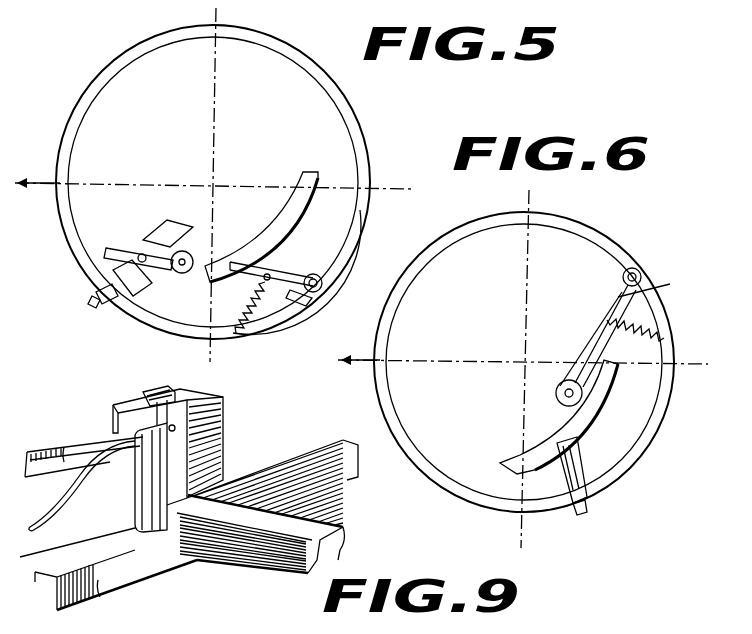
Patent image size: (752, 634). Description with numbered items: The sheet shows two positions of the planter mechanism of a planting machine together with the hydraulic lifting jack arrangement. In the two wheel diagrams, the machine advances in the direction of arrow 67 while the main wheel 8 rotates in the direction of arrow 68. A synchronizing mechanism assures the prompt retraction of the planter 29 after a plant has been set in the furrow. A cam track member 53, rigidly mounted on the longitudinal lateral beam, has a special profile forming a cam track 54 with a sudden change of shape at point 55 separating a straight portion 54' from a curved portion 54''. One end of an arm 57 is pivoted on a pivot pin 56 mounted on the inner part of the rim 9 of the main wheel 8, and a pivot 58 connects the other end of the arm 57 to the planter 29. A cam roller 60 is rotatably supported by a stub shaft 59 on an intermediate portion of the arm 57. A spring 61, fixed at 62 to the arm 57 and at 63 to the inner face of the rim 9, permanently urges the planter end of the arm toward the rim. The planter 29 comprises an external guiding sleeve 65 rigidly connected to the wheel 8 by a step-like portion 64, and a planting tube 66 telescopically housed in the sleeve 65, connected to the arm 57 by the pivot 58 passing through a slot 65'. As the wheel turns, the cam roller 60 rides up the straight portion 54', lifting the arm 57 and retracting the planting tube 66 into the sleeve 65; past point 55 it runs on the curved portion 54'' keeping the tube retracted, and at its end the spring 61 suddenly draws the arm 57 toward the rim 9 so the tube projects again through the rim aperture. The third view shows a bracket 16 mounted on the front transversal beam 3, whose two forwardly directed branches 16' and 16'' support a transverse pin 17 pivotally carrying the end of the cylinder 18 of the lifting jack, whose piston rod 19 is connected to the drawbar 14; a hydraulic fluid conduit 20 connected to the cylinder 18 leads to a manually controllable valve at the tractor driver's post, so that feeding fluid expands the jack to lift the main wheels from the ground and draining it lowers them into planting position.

In FIG. 9, the front transversal beam 3 is at (250, 545).
In FIG. 5, the main wheel 8 is at (341, 79).
In FIG. 6, the main wheel 8 is at (362, 405).
In FIG. 5, the rim 9 is at (366, 128).
In FIG. 6, the rim 9 is at (425, 495).
In FIG. 9, the drawbar 14 is at (95, 578).
In FIG. 9, the bracket 16 is at (220, 447).
In FIG. 9, the forwardly directed branch 16' is at (202, 399).
In FIG. 9, the forwardly directed branch 16'' is at (89, 409).
In FIG. 9, the transverse pin 17 is at (155, 392).
In FIG. 9, the cylinder 18 is at (143, 485).
In FIG. 9, the piston rod 19 is at (153, 540).
In FIG. 9, the hydraulic fluid conduit 20 is at (42, 526).
In FIG. 5, the planter 29 is at (97, 294).
In FIG. 6, the planter 29 is at (567, 455).
In FIG. 5, the cam track member 53 is at (292, 213).
In FIG. 6, the cam track member 53 is at (592, 412).
In FIG. 5, the cam track 54 is at (260, 221).
In FIG. 6, the cam track 54 is at (634, 390).
In FIG. 6, the straight portion 54' is at (479, 455).
In FIG. 5, the curved portion 54'' is at (288, 167).
In FIG. 5, the point 55 is at (222, 248).
In FIG. 6, the point 55 is at (522, 430).
In FIG. 5, the pivot pin 56 is at (323, 278).
In FIG. 6, the pivot pin 56 is at (640, 268).
In FIG. 5, the arm 57 is at (308, 300).
In FIG. 6, the arm 57 is at (657, 278).
In FIG. 5, the pivot 58 is at (140, 256).
In FIG. 5, the stub shaft 59 is at (186, 240).
In FIG. 6, the stub shaft 59 is at (568, 380).
In FIG. 5, the cam roller 60 is at (180, 275).
In FIG. 6, the cam roller 60 is at (556, 393).
In FIG. 5, the spring 61 is at (283, 318).
In FIG. 6, the spring 61 is at (622, 330).
In FIG. 5, the spring fixing point on arm 62 is at (280, 266).
In FIG. 6, the spring fixing point on arm 62 is at (612, 320).
In FIG. 5, the spring fixing point on rim 63 is at (236, 336).
In FIG. 6, the spring fixing point on rim 63 is at (660, 338).
In FIG. 5, the step-like portion 64 is at (110, 302).
In FIG. 6, the step-like portion 64 is at (588, 492).
In FIG. 5, the external guiding sleeve 65 is at (97, 278).
In FIG. 6, the external guiding sleeve 65 is at (619, 470).
In FIG. 5, the slot 65' is at (153, 232).
In FIG. 6, the slot 65' is at (491, 525).
In FIG. 5, the planting tube 66 is at (92, 304).
In FIG. 6, the planting tube 66 is at (586, 508).
In FIG. 5, the arrow 67 is at (43, 180).
In FIG. 6, the arrow 67 is at (360, 358).
In FIG. 5, the arrow 68 is at (122, 97).
In FIG. 6, the arrow 68 is at (440, 277).